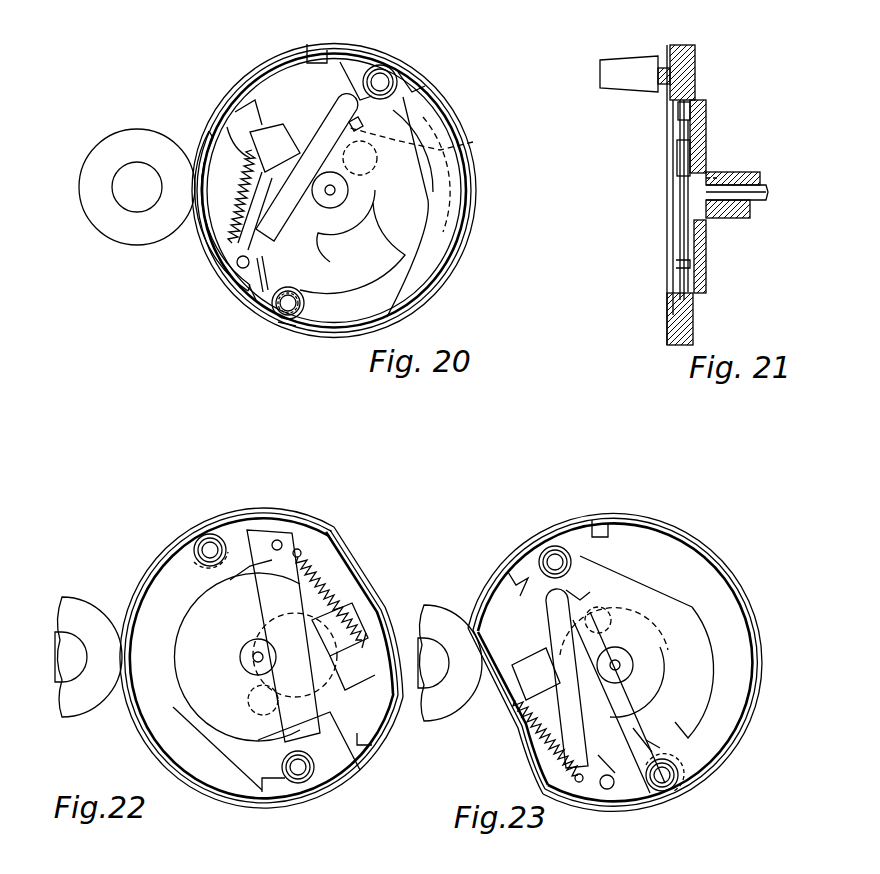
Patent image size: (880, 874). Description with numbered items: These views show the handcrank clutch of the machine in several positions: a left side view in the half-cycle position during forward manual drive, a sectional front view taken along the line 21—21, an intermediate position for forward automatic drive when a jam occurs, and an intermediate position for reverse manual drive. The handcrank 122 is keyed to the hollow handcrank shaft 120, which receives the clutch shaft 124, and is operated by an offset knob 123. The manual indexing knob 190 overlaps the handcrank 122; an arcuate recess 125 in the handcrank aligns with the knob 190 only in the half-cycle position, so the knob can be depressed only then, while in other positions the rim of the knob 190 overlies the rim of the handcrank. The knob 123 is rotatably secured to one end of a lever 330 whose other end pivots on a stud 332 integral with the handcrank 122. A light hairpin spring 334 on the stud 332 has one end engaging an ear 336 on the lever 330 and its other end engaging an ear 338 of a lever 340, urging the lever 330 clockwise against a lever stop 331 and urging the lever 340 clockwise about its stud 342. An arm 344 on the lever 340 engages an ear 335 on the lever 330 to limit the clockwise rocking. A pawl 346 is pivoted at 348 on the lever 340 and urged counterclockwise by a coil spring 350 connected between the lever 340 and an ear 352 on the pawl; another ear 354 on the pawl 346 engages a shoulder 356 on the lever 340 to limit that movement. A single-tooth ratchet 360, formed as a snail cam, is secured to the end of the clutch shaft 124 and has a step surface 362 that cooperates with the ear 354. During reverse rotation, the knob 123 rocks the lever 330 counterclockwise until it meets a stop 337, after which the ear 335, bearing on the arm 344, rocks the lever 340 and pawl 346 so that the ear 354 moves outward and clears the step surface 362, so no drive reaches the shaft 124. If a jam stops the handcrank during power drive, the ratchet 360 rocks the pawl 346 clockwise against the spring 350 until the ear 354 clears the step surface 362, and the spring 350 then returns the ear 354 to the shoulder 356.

In FIG. 21, the handcrank shaft 120 is at (732, 172).
In FIG. 20, the handcrank 122 is at (258, 62).
In FIG. 21, the handcrank 122 is at (683, 46).
In FIG. 22, the handcrank 122 is at (154, 558).
In FIG. 23, the handcrank 122 is at (566, 526).
In FIG. 20, the offset knob 123 is at (396, 72).
In FIG. 21, the offset knob 123 is at (612, 62).
In FIG. 22, the offset knob 123 is at (306, 778).
In FIG. 23, the offset knob 123 is at (538, 552).
In FIG. 20, the clutch shaft 124 is at (331, 196).
In FIG. 21, the clutch shaft 124 is at (760, 190).
In FIG. 23, the clutch shaft 124 is at (616, 660).
In FIG. 20, the arcuate recess 125 is at (185, 236).
In FIG. 22, the arcuate recess 125 is at (340, 538).
In FIG. 23, the arcuate recess 125 is at (535, 770).
In FIG. 20, the manual indexing knob 190 is at (100, 142).
In FIG. 22, the manual indexing knob 190 is at (62, 598).
In FIG. 23, the manual indexing knob 190 is at (444, 610).
In FIG. 20, the lever 330 is at (440, 108).
In FIG. 21, the lever 330 is at (678, 118).
In FIG. 22, the lever 330 is at (262, 658).
In FIG. 23, the lever 330 is at (545, 600).
In FIG. 20, the lever stop 331 is at (430, 80).
In FIG. 20, the stud 332 is at (292, 322).
In FIG. 23, the stud 332 is at (678, 785).
In FIG. 20, the hairpin spring 334 is at (278, 324).
In FIG. 23, the hairpin spring 334 is at (640, 790).
In FIG. 20, the ear 335 is at (350, 92).
In FIG. 23, the ear 335 is at (582, 594).
In FIG. 20, the ear 336 is at (322, 270).
In FIG. 20, the stop 337 is at (322, 44).
In FIG. 23, the stop 337 is at (510, 575).
In FIG. 20, the ear 338 is at (248, 298).
In FIG. 20, the lever 340 is at (278, 228).
In FIG. 21, the lever 340 is at (677, 162).
In FIG. 22, the lever 340 is at (284, 592).
In FIG. 23, the lever 340 is at (590, 705).
In FIG. 20, the stud 342 is at (255, 272).
In FIG. 23, the stud 342 is at (602, 790).
In FIG. 20, the arm 344 is at (334, 118).
In FIG. 23, the arm 344 is at (545, 620).
In FIG. 20, the pawl 346 is at (290, 140).
In FIG. 22, the pawl 346 is at (332, 688).
In FIG. 23, the pawl 346 is at (538, 672).
In FIG. 20, the pivot 348 is at (364, 127).
In FIG. 22, the pivot 348 is at (262, 714).
In FIG. 20, the coil spring 350 is at (225, 128).
In FIG. 22, the coil spring 350 is at (340, 565).
In FIG. 20, the ear 352 is at (240, 112).
In FIG. 20, the ear 354 is at (248, 88).
In FIG. 22, the ear 354 is at (332, 660).
In FIG. 23, the ear 354 is at (515, 728).
In FIG. 20, the shoulder 356 is at (236, 262).
In FIG. 22, the shoulder 356 is at (340, 612).
In FIG. 20, the single-tooth ratchet 360 is at (462, 192).
In FIG. 22, the single-tooth ratchet 360 is at (230, 620).
In FIG. 23, the single-tooth ratchet 360 is at (660, 690).
In FIG. 20, the step surface 362 is at (468, 143).
In FIG. 22, the step surface 362 is at (280, 630).
In FIG. 23, the step surface 362 is at (665, 640).
In FIG. 20, the section line 21 is at (377, 90).